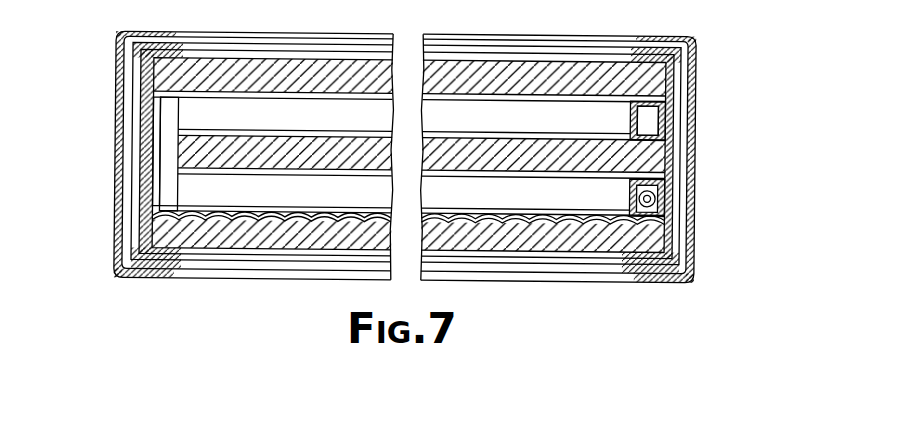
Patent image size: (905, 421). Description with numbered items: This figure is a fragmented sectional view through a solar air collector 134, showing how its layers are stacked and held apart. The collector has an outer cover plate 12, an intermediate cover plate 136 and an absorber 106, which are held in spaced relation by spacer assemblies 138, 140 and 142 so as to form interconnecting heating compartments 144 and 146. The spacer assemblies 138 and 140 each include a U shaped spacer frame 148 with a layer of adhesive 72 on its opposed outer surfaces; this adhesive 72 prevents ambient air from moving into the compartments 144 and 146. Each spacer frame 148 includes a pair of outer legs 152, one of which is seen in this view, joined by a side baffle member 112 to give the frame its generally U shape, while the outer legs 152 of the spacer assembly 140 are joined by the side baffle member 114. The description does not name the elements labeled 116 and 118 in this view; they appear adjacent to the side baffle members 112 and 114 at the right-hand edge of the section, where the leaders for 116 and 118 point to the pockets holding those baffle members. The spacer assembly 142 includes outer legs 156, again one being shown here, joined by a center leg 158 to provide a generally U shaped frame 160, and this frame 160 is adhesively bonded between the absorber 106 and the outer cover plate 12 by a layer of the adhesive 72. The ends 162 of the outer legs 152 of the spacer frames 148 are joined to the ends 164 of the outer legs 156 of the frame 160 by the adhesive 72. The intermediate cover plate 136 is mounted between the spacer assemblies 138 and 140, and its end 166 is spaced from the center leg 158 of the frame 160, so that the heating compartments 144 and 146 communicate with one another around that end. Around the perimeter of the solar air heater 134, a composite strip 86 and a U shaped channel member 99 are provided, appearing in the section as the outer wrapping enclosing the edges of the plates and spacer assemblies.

The outer cover plate 12 is at (257, 61).
The adhesive 72 is at (143, 77).
The composite strip 86 is at (694, 69).
The U shaped channel member 99 is at (702, 40).
The absorber 106 is at (410, 253).
The side baffle member 112 is at (637, 116).
The side baffle member 114 is at (627, 194).
The nut pocket 116 is at (632, 127).
The screw pocket 118 is at (632, 199).
The solar air collector 134 is at (722, 18).
The intermediate cover plate 136 is at (680, 157).
The spacer assembly 138 is at (683, 130).
The spacer assembly 140 is at (666, 195).
The spacer assembly 142 is at (124, 125).
The heating compartment 144 is at (357, 122).
The heating compartment 146 is at (372, 200).
The spacer frame 148 is at (667, 110).
The outer legs 152 is at (400, 105).
The outer legs 156 is at (147, 180).
The center leg 158 is at (138, 165).
The U shaped frame 160 is at (142, 61).
The ends 162 is at (174, 124).
The ends 164 is at (152, 104).
The end 166 is at (155, 150).